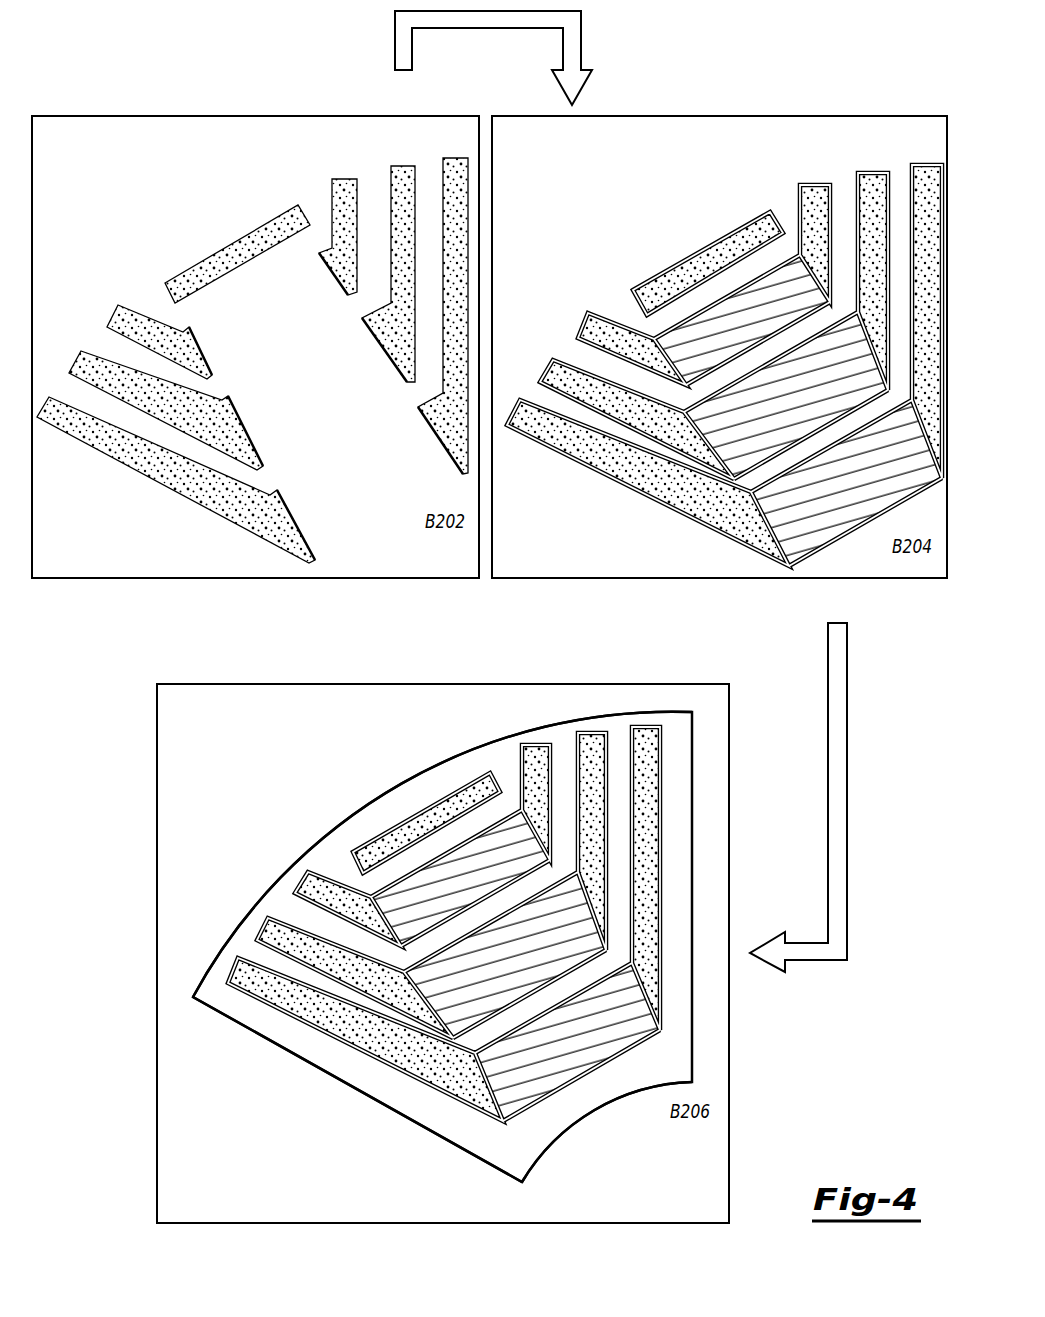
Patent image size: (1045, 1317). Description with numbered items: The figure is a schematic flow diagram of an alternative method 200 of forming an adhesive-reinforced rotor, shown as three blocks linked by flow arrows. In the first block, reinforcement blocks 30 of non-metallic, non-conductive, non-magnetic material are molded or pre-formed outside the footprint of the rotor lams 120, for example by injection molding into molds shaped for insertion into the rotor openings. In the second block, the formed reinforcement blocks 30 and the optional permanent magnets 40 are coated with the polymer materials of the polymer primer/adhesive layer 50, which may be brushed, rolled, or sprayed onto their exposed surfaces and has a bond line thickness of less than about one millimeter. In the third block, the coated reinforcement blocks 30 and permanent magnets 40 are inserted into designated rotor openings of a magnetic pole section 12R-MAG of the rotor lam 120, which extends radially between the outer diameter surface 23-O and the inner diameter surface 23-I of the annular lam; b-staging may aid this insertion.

The method 200 is at (803, 51).
The reinforcement block 30 is at (200, 220).
The permanent magnet 40 is at (746, 336).
The polymer primer/adhesive layer 50 is at (608, 322).
The rotor lam 120 is at (353, 830).
The magnetic pole section 12R-MAG is at (248, 833).
The outer diameter surface 23-O is at (400, 787).
The inner diameter surface 23-I is at (595, 1108).